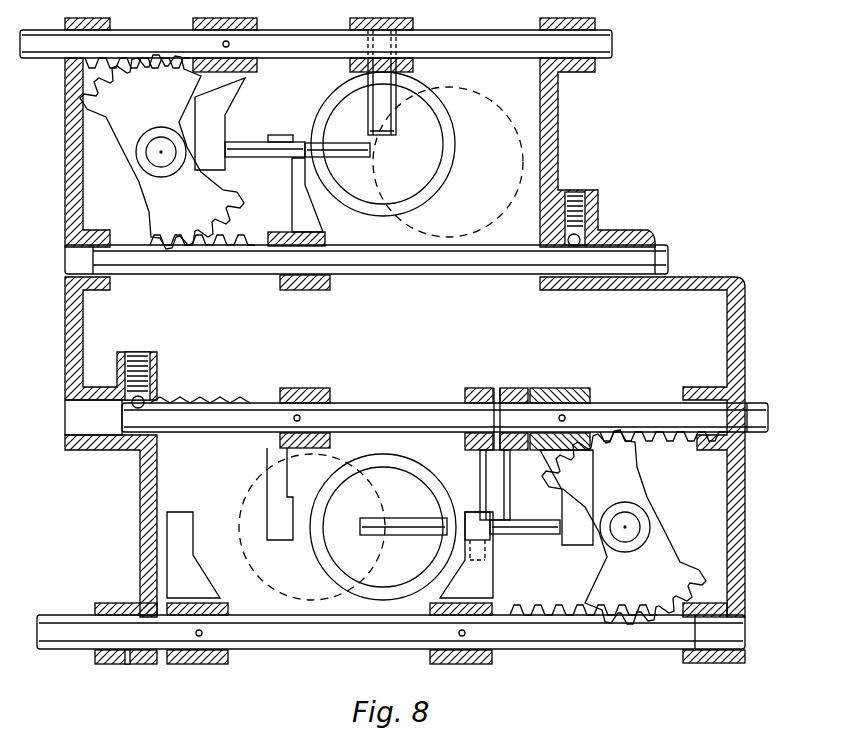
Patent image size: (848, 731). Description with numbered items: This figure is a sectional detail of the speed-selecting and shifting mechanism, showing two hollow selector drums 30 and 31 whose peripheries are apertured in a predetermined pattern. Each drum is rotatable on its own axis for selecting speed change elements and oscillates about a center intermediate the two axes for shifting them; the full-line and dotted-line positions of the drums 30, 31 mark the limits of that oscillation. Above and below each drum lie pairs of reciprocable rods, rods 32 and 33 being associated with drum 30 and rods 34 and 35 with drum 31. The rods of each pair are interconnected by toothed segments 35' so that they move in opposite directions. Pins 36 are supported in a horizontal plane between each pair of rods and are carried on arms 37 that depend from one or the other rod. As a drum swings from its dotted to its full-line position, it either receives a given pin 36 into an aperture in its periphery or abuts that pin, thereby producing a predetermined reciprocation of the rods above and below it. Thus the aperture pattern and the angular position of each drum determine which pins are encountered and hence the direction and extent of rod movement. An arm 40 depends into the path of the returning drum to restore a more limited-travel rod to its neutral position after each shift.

The selector member (hollow drum) 30 is at (446, 172).
The selector member (hollow drum) 31 is at (415, 466).
The reciprocable rod 32 is at (461, 44).
The reciprocable rod 33 is at (450, 273).
The reciprocable rod 34 is at (382, 408).
The reciprocable rod 35 is at (391, 640).
The segment 35' is at (393, 339).
The pin 36 is at (250, 145).
The arm 37 is at (236, 94).
The arm 40 is at (266, 472).